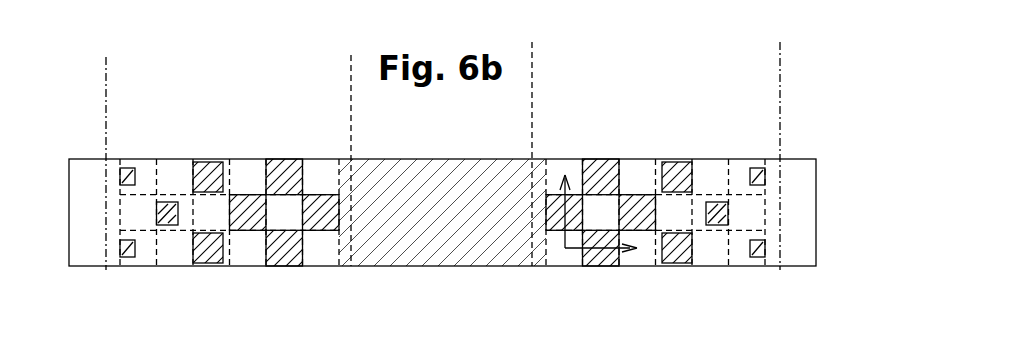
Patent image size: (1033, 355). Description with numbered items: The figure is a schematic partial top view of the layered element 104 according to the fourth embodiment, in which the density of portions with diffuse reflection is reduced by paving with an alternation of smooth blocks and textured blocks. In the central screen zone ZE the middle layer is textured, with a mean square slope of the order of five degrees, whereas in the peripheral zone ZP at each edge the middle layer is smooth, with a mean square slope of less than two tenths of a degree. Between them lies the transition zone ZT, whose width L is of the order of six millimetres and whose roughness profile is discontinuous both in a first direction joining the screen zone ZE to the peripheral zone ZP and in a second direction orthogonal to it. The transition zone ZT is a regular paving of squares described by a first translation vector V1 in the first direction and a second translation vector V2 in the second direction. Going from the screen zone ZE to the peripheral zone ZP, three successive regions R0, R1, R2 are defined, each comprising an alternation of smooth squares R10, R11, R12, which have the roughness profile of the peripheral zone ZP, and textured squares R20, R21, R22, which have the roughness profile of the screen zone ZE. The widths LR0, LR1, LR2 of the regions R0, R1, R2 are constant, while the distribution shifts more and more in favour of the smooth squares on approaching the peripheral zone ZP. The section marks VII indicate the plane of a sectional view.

The layered element 104 is at (826, 129).
The screen zone ZE is at (530, 277).
The peripheral zone ZP is at (106, 277).
The transition zone ZT is at (350, 277).
The width of region R2 LR2 is at (193, 143).
The width of region R1 LR1 is at (266, 143).
The width of region R0 LR0 is at (339, 143).
The width of the transition zone L is at (351, 62).
The first region R0 is at (566, 172).
The second region R1 is at (658, 170).
The third region R2 is at (756, 167).
The smooth squares of region R0 R10 is at (556, 172).
The textured squares of region R0 R20 is at (600, 178).
The smooth squares of region R1 R11 is at (637, 178).
The textured squares of region R1 R21 is at (675, 172).
The smooth squares of region R2 R12 is at (710, 178).
The textured squares of region R2 R22 is at (762, 178).
The first translation vector V1 is at (585, 235).
The second translation vector V2 is at (565, 238).
The section line VII is at (106, 178).